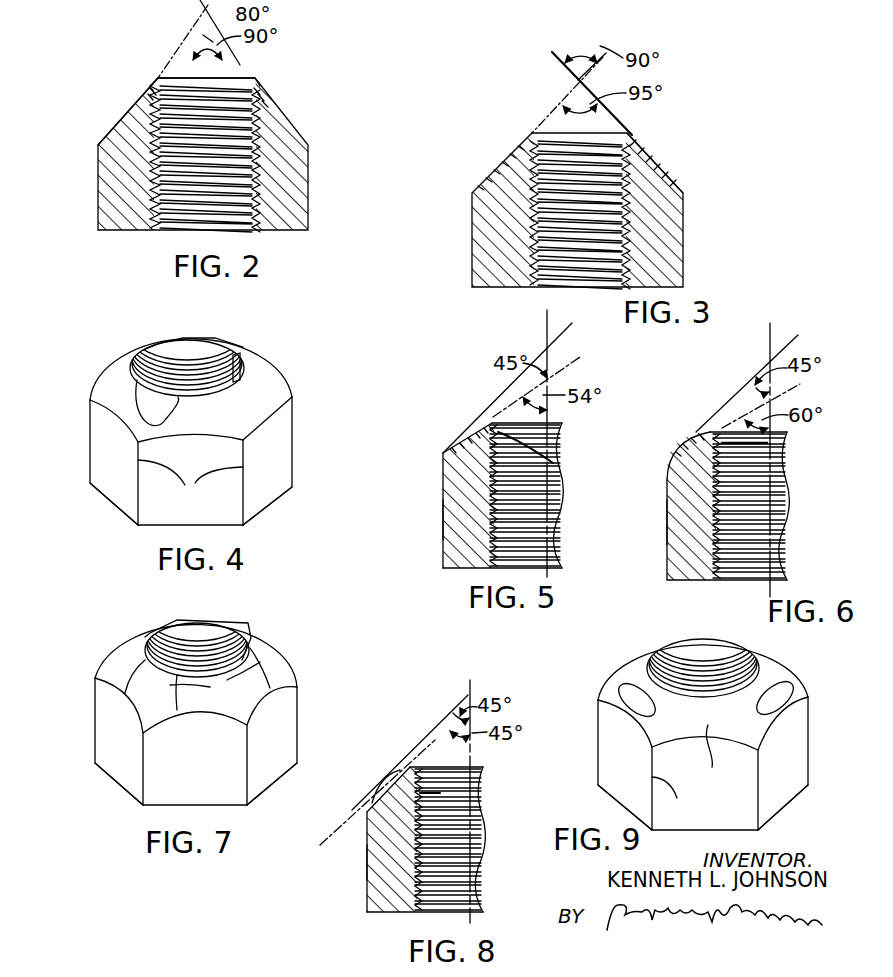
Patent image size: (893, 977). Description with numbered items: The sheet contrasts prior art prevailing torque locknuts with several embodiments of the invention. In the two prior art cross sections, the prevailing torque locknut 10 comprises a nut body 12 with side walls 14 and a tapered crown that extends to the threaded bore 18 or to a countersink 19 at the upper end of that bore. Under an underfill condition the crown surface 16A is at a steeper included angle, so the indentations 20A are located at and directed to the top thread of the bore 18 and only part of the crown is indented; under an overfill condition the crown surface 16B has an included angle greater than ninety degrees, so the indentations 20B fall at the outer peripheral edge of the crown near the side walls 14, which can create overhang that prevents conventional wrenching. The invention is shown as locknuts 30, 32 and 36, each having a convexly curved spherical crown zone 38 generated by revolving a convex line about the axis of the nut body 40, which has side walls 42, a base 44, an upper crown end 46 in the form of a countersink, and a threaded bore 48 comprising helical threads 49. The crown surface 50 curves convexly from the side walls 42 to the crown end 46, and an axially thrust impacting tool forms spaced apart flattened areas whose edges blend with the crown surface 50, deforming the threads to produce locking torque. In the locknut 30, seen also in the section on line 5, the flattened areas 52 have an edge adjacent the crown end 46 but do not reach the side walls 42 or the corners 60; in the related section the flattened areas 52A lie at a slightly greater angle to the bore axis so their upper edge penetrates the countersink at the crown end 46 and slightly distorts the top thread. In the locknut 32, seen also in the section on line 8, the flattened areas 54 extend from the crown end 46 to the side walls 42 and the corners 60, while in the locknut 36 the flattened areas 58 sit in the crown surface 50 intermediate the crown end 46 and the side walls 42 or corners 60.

In FIG. 2, the nut body 12 is at (280, 208).
In FIG. 3, the nut body 12 is at (683, 275).
In FIG. 2, the side walls 14 is at (98, 192).
In FIG. 3, the side walls 14 is at (472, 243).
In FIG. 2, the crown surface 16A is at (115, 125).
In FIG. 3, the crown surface 16B is at (638, 141).
In FIG. 2, the threaded bore 18 is at (167, 207).
In FIG. 3, the threaded bore 18 is at (545, 258).
In FIG. 2, the countersink 19 is at (236, 82).
In FIG. 2, the indentations 20A is at (150, 100).
In FIG. 3, the indentations 20B is at (482, 172).
In FIG. 4, the locknut 30 is at (302, 448).
In FIG. 7, the locknut 32 is at (295, 736).
In FIG. 9, the locknut 36 is at (807, 748).
In FIG. 4, the convexly curved spherical crown zone 38 is at (255, 409).
In FIG. 7, the convexly curved spherical crown zone 38 is at (193, 705).
In FIG. 9, the convexly curved spherical crown zone 38 is at (705, 777).
In FIG. 4, the nut body 40 is at (88, 418).
In FIG. 5, the nut body 40 is at (453, 556).
In FIG. 6, the nut body 40 is at (667, 557).
In FIG. 8, the nut body 40 is at (370, 900).
In FIG. 9, the nut body 40 is at (598, 733).
In FIG. 4, the side walls 42 is at (112, 488).
In FIG. 7, the side walls 42 is at (150, 797).
In FIG. 9, the side walls 42 is at (772, 792).
In FIG. 5, the base 44 is at (465, 568).
In FIG. 8, the base 44 is at (382, 912).
In FIG. 4, the upper crown end 46 is at (222, 342).
In FIG. 5, the upper crown end 46 is at (553, 425).
In FIG. 6, the upper crown end 46 is at (787, 433).
In FIG. 7, the upper crown end 46 is at (208, 622).
In FIG. 8, the upper crown end 46 is at (475, 770).
In FIG. 9, the upper crown end 46 is at (725, 647).
In FIG. 4, the threaded bore 48 is at (197, 345).
In FIG. 5, the threaded bore 48 is at (555, 463).
In FIG. 6, the threaded bore 48 is at (728, 450).
In FIG. 8, the threaded bore 48 is at (420, 793).
In FIG. 5, the helical threads 49 is at (545, 497).
In FIG. 6, the helical threads 49 is at (783, 513).
In FIG. 8, the helical threads 49 is at (468, 852).
In FIG. 4, the crown surface 50 is at (112, 368).
In FIG. 5, the crown surface 50 is at (436, 462).
In FIG. 6, the crown surface 50 is at (662, 465).
In FIG. 7, the crown surface 50 is at (117, 652).
In FIG. 9, the crown surface 50 is at (623, 670).
In FIG. 4, the flattened areas 52 is at (167, 403).
In FIG. 5, the flattened areas 52 is at (478, 427).
In FIG. 6, the flattened areas 52A is at (693, 445).
In FIG. 7, the flattened areas 54 is at (260, 664).
In FIG. 8, the flattened areas 54 is at (388, 787).
In FIG. 9, the flattened areas 58 is at (635, 698).
In FIG. 4, the corners 60 is at (190, 487).
In FIG. 5, the corners 60 is at (443, 505).
In FIG. 6, the corners 60 is at (667, 508).
In FIG. 7, the corners 60 is at (142, 765).
In FIG. 8, the corners 60 is at (365, 853).
In FIG. 9, the corners 60 is at (674, 802).
In FIG. 4, the section line 5— 5 is at (80, 485).
In FIG. 7, the section line 8— 8 is at (363, 682).
In FIG. 9, the prevailing torque locknut 10 is at (701, 602).